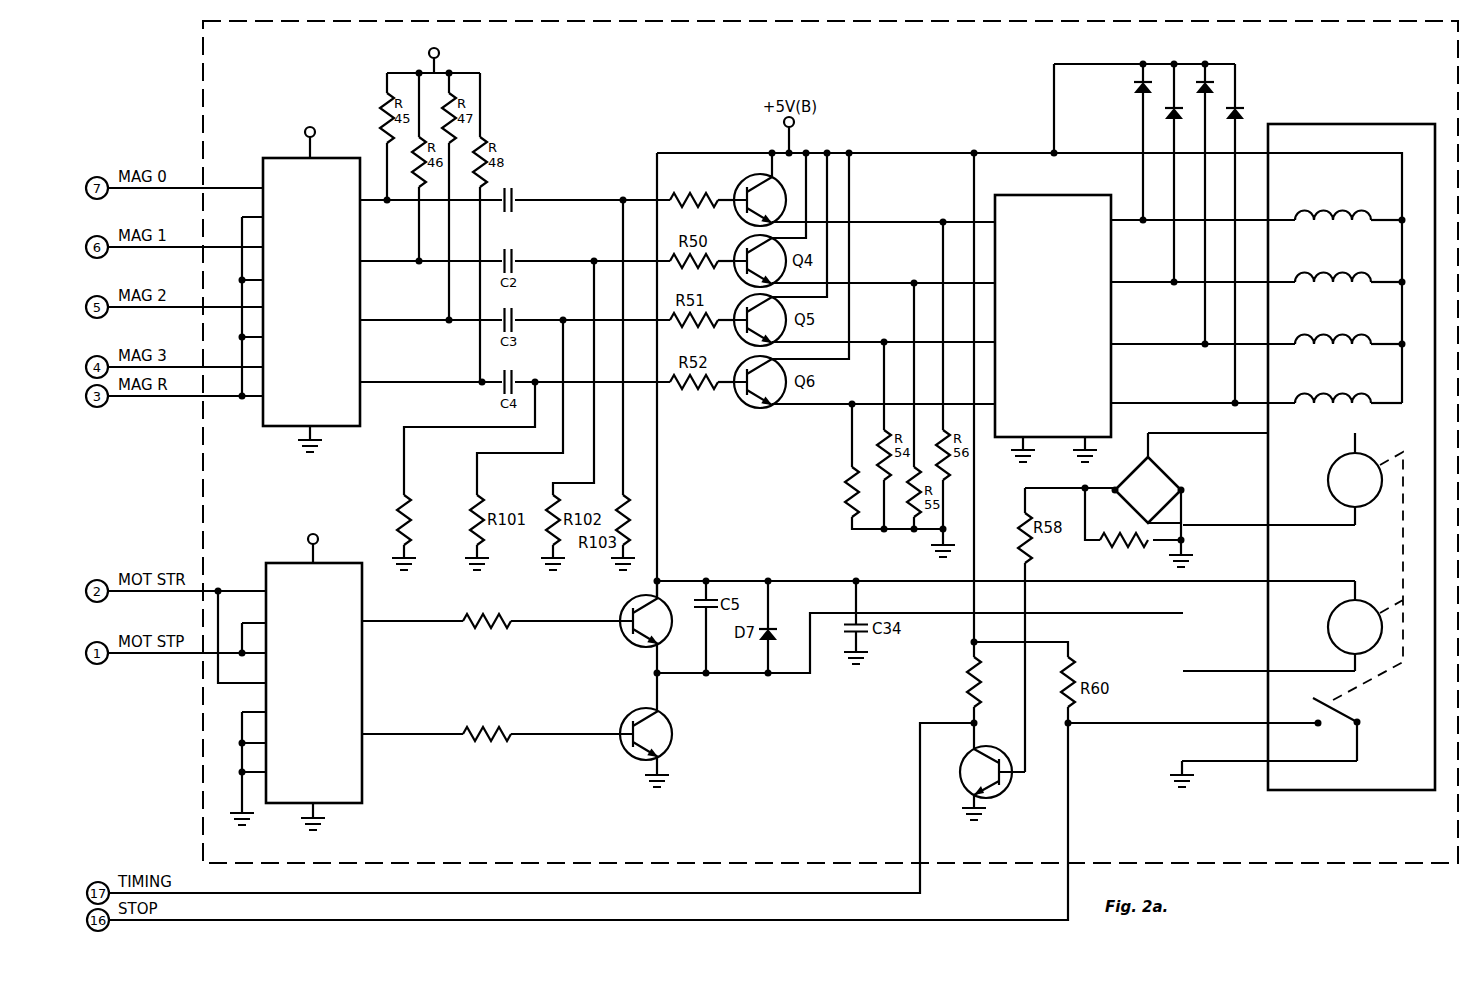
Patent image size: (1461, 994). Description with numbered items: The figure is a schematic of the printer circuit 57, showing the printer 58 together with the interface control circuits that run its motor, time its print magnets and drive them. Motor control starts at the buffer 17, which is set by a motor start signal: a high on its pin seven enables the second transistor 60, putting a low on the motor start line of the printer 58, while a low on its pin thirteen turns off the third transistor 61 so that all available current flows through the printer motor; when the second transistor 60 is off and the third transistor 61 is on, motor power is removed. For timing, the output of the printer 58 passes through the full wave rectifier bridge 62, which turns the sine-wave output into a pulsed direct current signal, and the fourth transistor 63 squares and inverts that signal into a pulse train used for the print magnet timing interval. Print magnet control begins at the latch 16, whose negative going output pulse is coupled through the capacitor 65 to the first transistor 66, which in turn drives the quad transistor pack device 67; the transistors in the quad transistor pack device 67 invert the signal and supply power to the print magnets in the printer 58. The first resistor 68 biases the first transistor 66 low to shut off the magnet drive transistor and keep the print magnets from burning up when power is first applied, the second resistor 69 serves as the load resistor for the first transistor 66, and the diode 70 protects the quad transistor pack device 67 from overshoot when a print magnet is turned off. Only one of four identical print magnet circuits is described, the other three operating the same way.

The latch 16 is at (285, 158).
The buffer 17 is at (285, 563).
The printer circuit 57 is at (170, 740).
The printer 58 is at (1407, 127).
The second transistor 60 is at (623, 712).
The third transistor 61 is at (620, 606).
The full wave rectifier bridge 62 is at (1183, 486).
The fourth transistor 63 is at (974, 760).
The capacitor 65 is at (514, 192).
The first transistor 66 is at (738, 212).
The quad transistor pack device 67 is at (1048, 195).
The first resistor 68 is at (400, 508).
The second resistor 69 is at (851, 488).
The diode 70 is at (1141, 64).